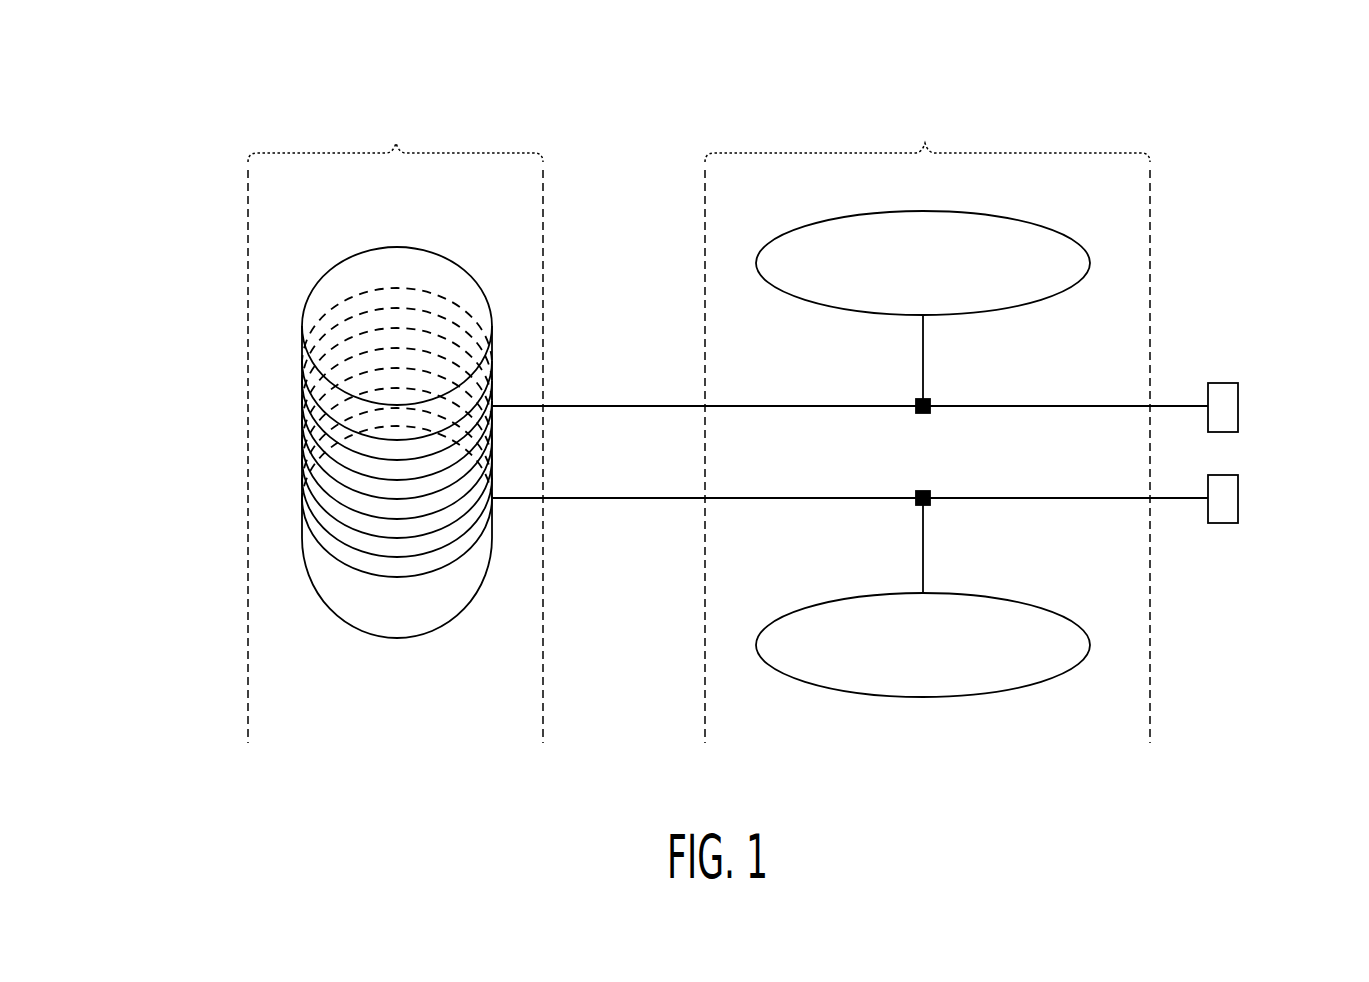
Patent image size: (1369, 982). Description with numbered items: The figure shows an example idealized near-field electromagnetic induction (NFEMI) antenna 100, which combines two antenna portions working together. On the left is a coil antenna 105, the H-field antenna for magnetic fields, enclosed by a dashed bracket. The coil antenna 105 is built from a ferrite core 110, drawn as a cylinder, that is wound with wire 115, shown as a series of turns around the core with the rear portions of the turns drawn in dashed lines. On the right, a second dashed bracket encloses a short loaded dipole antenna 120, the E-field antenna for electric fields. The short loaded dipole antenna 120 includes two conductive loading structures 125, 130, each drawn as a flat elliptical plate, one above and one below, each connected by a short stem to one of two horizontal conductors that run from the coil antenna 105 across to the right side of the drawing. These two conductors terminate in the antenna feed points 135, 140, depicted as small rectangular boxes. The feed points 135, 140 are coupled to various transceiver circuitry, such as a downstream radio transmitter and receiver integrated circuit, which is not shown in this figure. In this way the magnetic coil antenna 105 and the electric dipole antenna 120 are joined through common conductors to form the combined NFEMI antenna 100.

The near-field electromagnetic induction antenna 100 is at (157, 131).
The coil antenna 105 is at (395, 424).
The ferrite core 110 is at (450, 257).
The wire 115 is at (352, 570).
The short loaded dipole antenna 120 is at (927, 425).
The conductive loading structure 125 is at (1047, 300).
The conductive loading structure 130 is at (1045, 608).
The feed point 135 is at (1238, 405).
The feed point 140 is at (1238, 496).